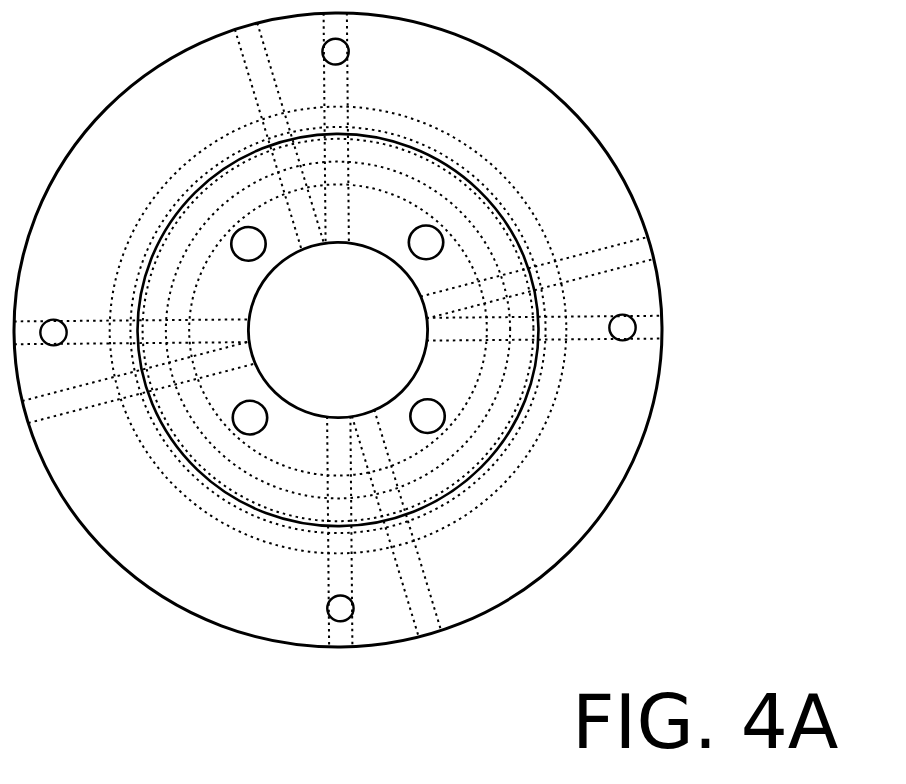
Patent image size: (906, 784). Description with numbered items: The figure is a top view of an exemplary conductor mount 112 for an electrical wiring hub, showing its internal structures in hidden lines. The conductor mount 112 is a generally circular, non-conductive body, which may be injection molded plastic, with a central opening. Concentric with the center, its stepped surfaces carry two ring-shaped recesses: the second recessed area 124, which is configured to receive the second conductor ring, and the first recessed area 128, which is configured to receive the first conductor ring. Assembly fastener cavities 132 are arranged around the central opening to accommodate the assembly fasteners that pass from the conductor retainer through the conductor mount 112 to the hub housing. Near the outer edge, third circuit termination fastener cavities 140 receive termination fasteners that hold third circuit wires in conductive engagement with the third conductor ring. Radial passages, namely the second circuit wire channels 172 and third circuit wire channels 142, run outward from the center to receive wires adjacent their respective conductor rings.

The conductor mount 112 is at (582, 118).
The second recessed area 124 is at (532, 242).
The first recessed area 128 is at (497, 415).
The assembly fastener cavity 132 is at (427, 240).
The third circuit termination fastener cavities 140 is at (628, 326).
The third circuit wire channels 142 is at (653, 333).
The second circuit wire channels 172 is at (368, 433).